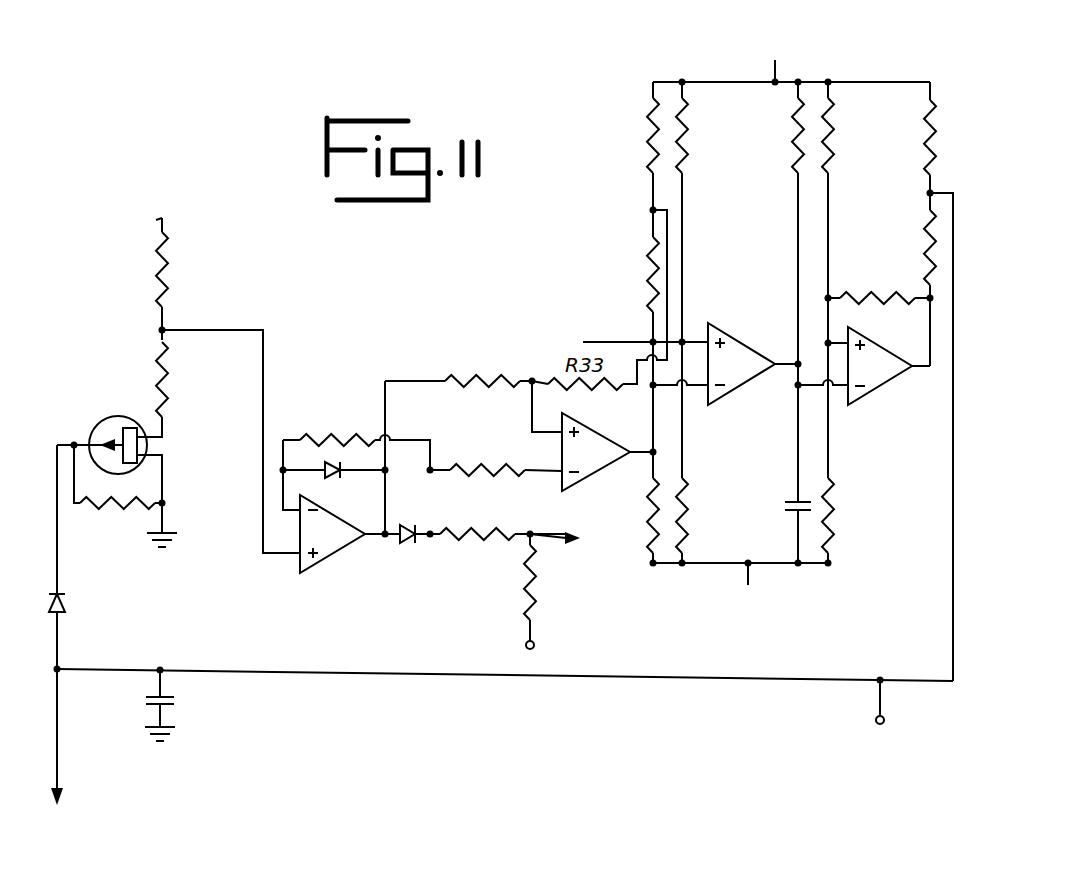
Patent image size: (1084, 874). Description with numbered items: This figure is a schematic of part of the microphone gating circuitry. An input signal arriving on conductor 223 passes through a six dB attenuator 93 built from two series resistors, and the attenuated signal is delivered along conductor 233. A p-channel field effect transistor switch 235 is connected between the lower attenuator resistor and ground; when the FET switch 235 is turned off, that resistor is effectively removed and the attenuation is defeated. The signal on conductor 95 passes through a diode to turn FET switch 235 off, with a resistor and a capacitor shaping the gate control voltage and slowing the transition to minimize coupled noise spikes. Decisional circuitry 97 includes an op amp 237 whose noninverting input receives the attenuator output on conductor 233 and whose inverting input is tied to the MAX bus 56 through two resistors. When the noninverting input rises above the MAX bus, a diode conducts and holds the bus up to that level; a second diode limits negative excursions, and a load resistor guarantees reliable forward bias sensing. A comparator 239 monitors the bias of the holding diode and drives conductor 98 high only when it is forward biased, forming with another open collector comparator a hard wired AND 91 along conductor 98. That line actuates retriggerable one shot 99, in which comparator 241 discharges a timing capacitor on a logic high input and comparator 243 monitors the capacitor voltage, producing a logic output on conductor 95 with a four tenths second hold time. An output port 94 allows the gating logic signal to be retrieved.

The conductor 223 is at (165, 228).
The 6 dB attenuator 93 is at (136, 316).
The conductor 233 is at (288, 300).
The field effect transistor switch 235 is at (111, 402).
The conductor 95 is at (62, 768).
The decisional circuitry 97 is at (467, 466).
The op amp 237 is at (338, 540).
The comparator 239 is at (592, 455).
The MAX bus 56 is at (543, 545).
The conductor 98 is at (598, 342).
The hard wired AND 91 is at (759, 322).
The retriggerable one shot 99 is at (722, 72).
The comparator 241 is at (742, 376).
The comparator 243 is at (880, 378).
The output port 94 is at (886, 720).